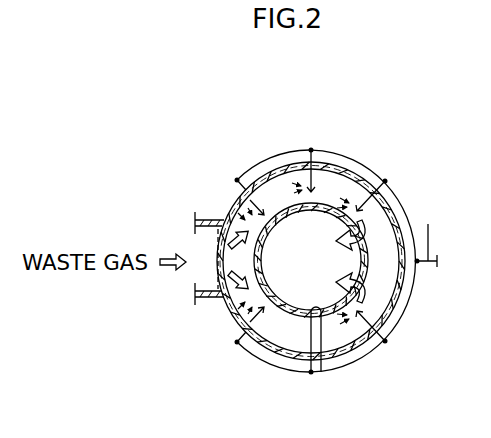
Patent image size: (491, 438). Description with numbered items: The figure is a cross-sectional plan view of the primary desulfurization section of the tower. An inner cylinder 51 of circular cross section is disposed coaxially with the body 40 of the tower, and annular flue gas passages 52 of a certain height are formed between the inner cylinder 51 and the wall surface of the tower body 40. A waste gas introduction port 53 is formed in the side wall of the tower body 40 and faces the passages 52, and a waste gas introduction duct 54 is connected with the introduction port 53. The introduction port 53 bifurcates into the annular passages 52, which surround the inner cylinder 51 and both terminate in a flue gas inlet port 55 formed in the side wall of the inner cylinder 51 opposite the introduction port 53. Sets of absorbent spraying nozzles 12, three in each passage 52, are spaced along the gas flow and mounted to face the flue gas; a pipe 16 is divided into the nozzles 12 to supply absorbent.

The absorbent spraying nozzles 12 is at (249, 201).
The pipe 16 is at (416, 232).
The body of the tower 40 is at (258, 340).
The inner cylinder 51 is at (318, 362).
The flue gas passages 52 is at (275, 197).
The waste gas introduction port 53 is at (212, 300).
The waste gas introduction duct 54 is at (212, 274).
The flue gas inlet port 55 is at (397, 290).